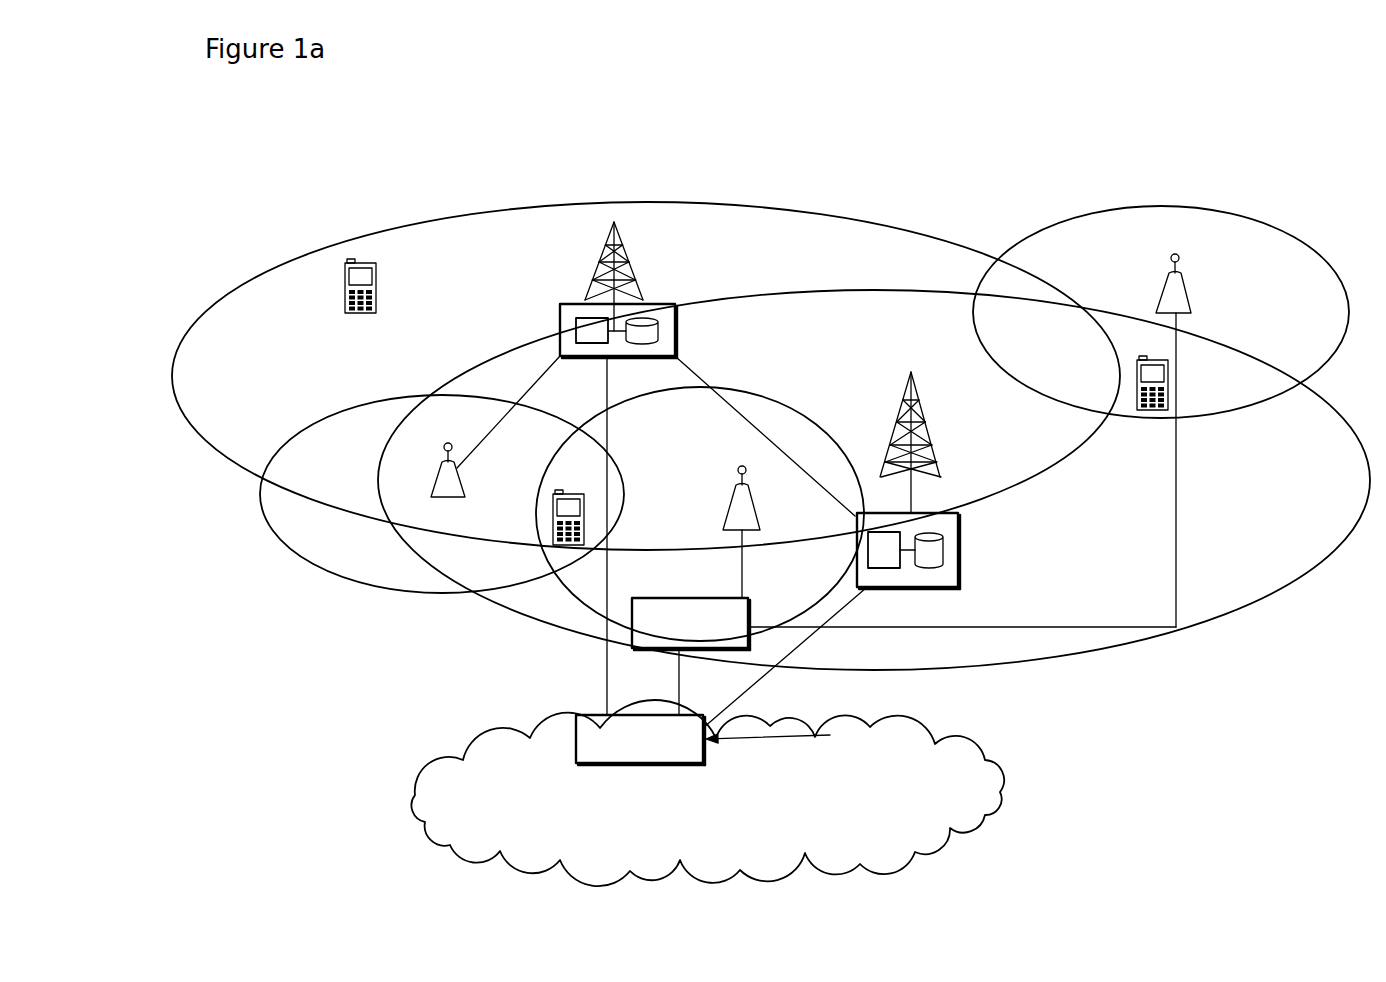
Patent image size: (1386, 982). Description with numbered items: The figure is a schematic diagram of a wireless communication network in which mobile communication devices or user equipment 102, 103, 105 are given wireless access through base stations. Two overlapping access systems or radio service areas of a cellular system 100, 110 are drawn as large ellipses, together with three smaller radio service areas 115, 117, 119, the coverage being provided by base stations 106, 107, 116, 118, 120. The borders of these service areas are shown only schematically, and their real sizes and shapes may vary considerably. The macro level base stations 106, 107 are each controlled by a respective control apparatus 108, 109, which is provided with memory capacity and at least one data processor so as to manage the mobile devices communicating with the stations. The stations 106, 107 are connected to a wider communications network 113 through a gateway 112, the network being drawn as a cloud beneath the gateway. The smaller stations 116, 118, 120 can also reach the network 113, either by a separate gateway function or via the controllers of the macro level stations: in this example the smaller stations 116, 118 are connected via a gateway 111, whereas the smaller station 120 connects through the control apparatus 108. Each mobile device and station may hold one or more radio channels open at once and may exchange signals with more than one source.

The radio service area of cellular system 100 is at (256, 243).
The mobile communication device 102 is at (342, 303).
The mobile communication device 103 is at (552, 522).
The mobile communication device 105 is at (1150, 412).
The macro level base station 106 is at (597, 268).
The macro level base station 107 is at (935, 442).
The control apparatus 108 is at (560, 318).
The control apparatus 109 is at (948, 575).
The radio service area of cellular system 110 is at (1248, 634).
The gateway 111 is at (640, 628).
The gateway 112 is at (576, 715).
The wider communications network 113 is at (498, 773).
The smaller radio service area 115 is at (1322, 221).
The smaller station 116 is at (1160, 287).
The smaller radio service area 117 is at (780, 391).
The smaller station 118 is at (733, 513).
The smaller radio service area 119 is at (339, 587).
The smaller station 120 is at (430, 477).